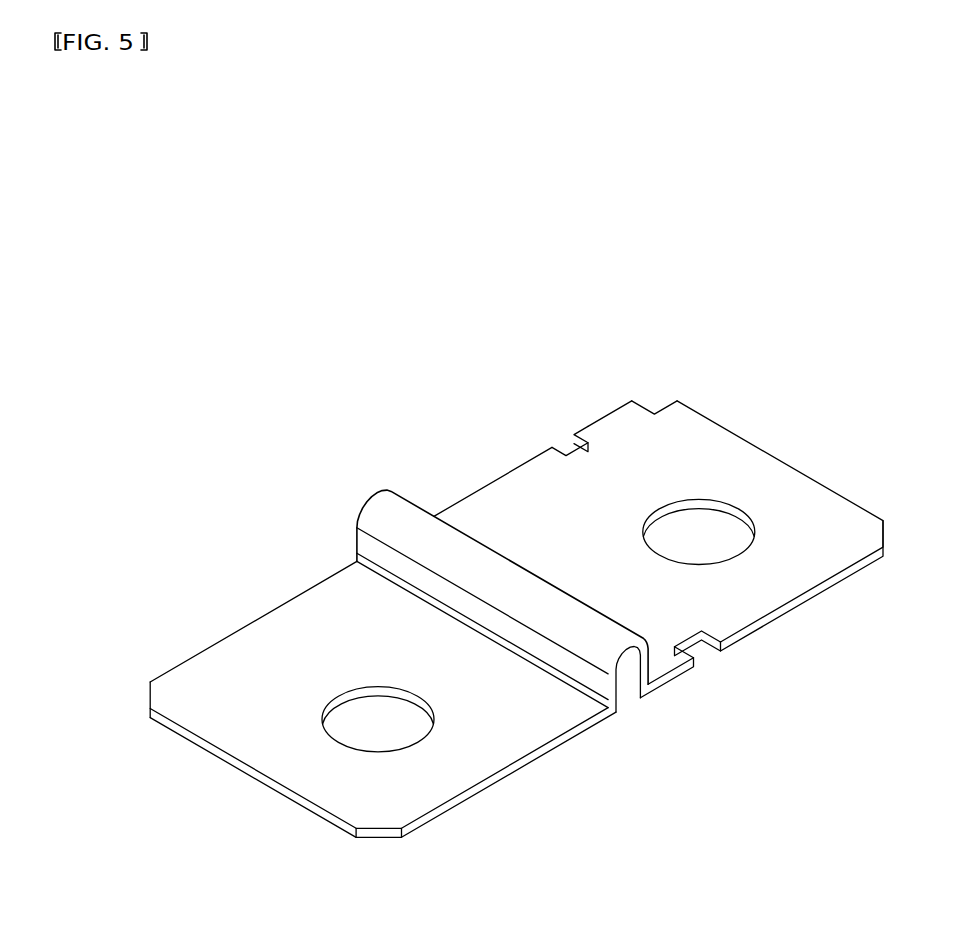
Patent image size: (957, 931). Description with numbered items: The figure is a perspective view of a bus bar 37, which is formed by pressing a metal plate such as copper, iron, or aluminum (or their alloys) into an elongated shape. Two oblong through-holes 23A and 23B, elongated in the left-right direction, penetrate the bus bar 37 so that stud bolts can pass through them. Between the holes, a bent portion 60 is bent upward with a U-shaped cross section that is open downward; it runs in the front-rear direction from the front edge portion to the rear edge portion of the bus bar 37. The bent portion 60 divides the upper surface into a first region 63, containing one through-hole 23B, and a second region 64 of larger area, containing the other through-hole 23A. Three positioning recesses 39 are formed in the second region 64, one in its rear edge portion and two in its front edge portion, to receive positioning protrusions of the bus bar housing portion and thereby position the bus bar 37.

The bus bar 37 is at (742, 373).
The positioning recess 39 is at (562, 440).
The through-hole 23A is at (657, 554).
The through-hole 23B is at (331, 737).
The bent portion 60 is at (413, 527).
The first region 63 is at (191, 698).
The second region 64 is at (832, 518).